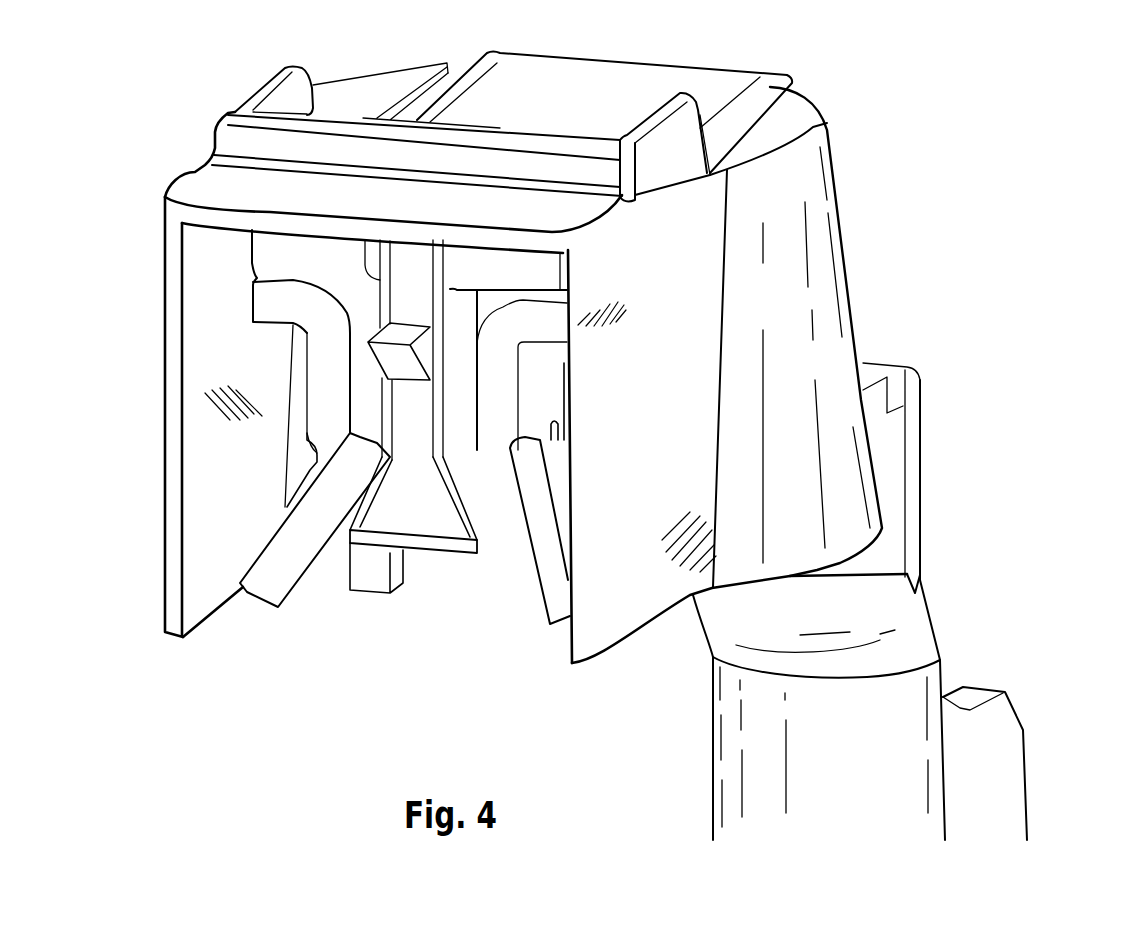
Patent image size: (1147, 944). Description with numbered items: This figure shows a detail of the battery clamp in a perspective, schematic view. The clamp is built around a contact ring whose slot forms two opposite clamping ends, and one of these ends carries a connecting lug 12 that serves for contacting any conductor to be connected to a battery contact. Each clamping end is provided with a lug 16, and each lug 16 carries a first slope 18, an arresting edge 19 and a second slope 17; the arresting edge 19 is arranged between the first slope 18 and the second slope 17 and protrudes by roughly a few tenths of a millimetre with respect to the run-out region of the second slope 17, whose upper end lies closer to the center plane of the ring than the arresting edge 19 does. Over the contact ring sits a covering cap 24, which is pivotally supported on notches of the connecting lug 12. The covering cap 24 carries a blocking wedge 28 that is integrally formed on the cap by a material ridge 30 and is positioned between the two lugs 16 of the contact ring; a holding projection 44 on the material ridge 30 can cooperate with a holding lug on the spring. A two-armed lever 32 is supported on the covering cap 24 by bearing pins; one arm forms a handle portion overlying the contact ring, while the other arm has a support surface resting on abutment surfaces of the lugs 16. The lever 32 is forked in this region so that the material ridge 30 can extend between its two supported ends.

The connecting lug 12 is at (1013, 747).
The lug 16 is at (327, 408).
The second slope 17 is at (362, 373).
The first slope 18 is at (298, 580).
The arresting edge 19 is at (365, 430).
The covering cap 24 is at (817, 205).
The blocking wedge 28 is at (423, 520).
The material ridge 30 is at (410, 303).
The two-armed lever 32 is at (613, 78).
The holding projection 44 is at (366, 342).